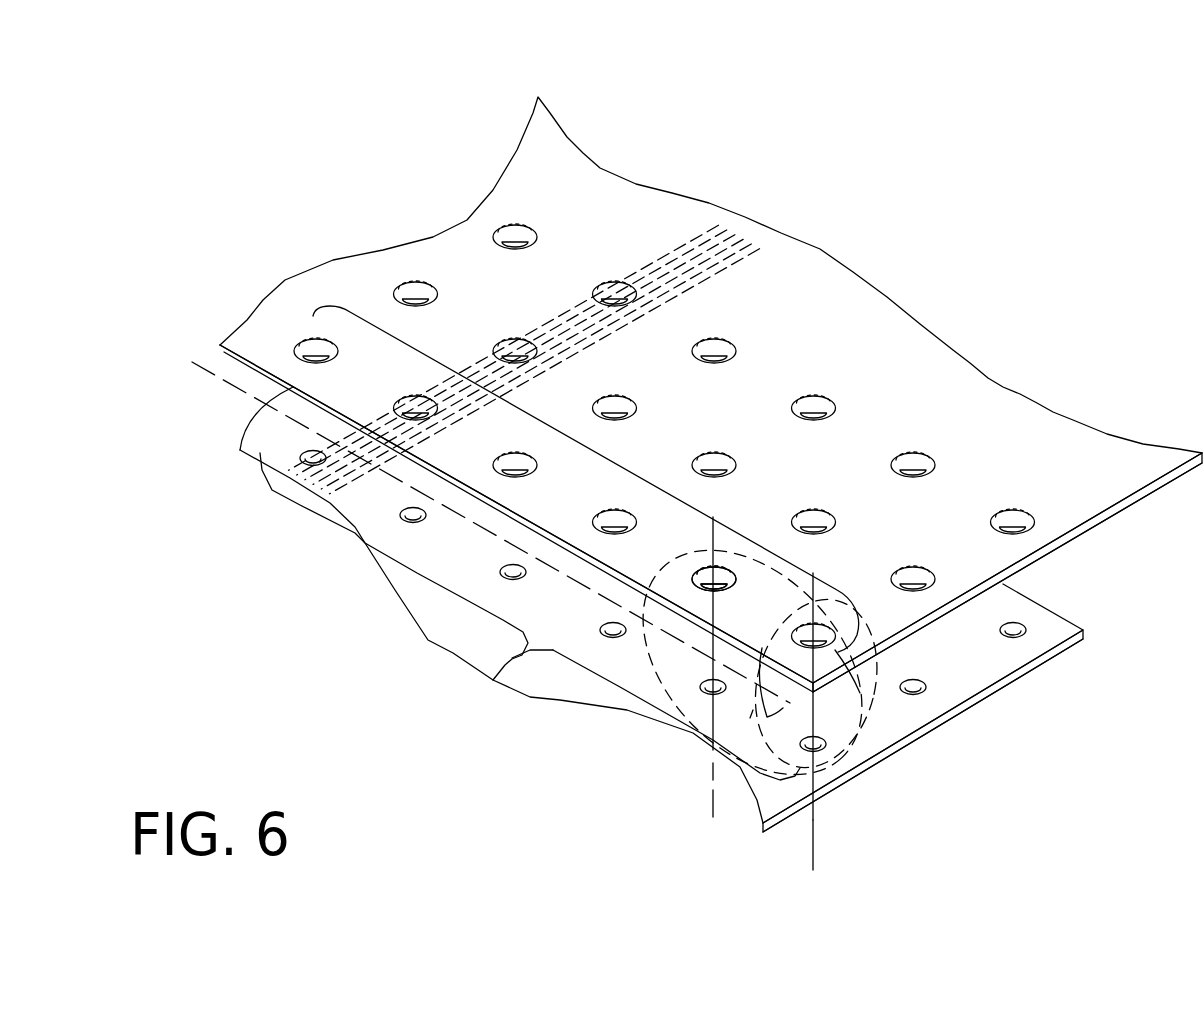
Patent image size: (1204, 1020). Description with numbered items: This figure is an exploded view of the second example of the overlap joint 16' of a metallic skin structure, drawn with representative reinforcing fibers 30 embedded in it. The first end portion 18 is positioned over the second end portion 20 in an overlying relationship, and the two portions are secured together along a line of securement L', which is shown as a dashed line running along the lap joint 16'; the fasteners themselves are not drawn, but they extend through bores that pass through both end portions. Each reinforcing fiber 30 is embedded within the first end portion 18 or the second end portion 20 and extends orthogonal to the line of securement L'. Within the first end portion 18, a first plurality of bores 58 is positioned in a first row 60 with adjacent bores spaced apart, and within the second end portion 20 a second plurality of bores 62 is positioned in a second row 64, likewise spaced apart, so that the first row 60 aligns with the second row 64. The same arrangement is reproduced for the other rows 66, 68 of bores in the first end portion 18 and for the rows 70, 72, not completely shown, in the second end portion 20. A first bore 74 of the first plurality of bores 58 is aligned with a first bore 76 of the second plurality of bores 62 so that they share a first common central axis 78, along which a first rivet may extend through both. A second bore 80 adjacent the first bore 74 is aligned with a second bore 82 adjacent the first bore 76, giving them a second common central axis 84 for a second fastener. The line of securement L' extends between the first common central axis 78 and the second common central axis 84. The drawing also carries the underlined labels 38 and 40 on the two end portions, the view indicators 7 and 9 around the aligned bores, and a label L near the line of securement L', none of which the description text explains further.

The overlap joint 16' is at (671, 462).
The first end portion 18 is at (1043, 438).
The second end portion 20 is at (1040, 622).
The reinforcing fiber 30 is at (694, 229).
The first region of upper plate 38 is at (1012, 251).
The region of lower plate 40 is at (264, 637).
The first plurality of bores 58 is at (608, 455).
The first row 60 is at (290, 337).
The second plurality of bores 62 is at (492, 678).
The second row 64 is at (300, 447).
The row of bores 66 is at (930, 585).
The row of bores 68 is at (1037, 537).
The row of bores 70 is at (927, 697).
The row of bores 72 is at (1030, 640).
The first bore of first plurality of bores 74 is at (897, 683).
The first bore of second plurality of bores 76 is at (817, 752).
The first common central axis 78 is at (813, 835).
The second bore of first plurality of bores 80 is at (738, 580).
The second bore of second plurality of bores 82 is at (700, 684).
The second common central axis 84 is at (655, 652).
The section view 7 indicator 7 is at (775, 633).
The section view 9 indicator 9 is at (910, 740).
The axis L is at (741, 721).
The line of securement L' is at (465, 532).